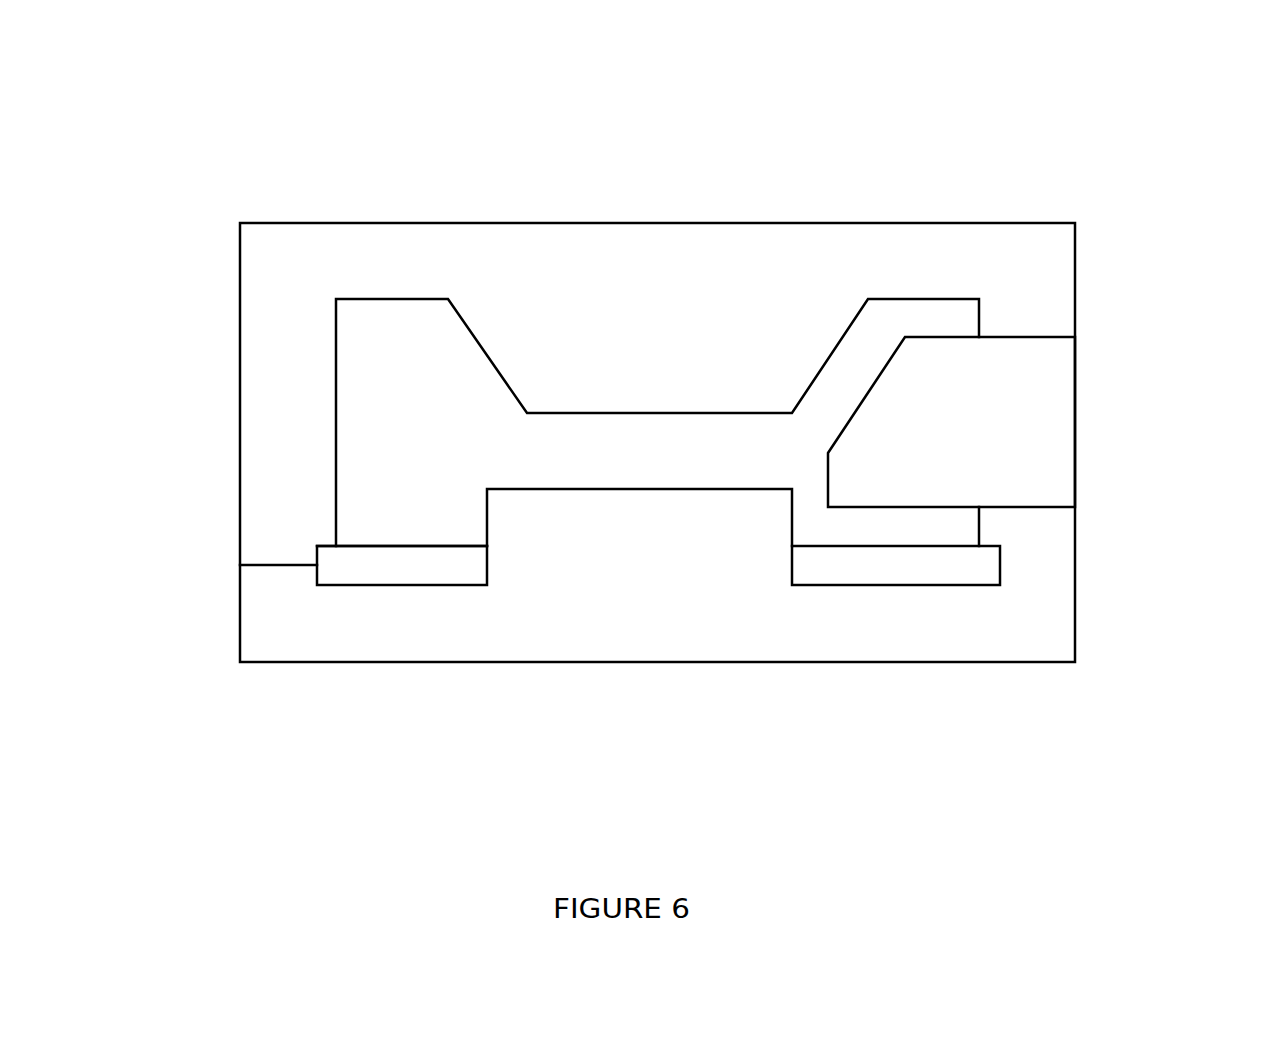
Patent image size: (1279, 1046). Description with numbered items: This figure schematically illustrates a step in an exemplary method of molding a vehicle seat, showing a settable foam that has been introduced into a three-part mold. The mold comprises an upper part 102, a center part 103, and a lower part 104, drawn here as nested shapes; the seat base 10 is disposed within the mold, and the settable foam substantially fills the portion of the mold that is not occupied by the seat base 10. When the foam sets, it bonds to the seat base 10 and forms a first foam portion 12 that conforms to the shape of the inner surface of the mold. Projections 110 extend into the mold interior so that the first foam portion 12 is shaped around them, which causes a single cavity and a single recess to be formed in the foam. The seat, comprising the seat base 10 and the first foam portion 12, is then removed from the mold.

The upper part 102 is at (219, 228).
The center part 103 is at (1091, 394).
The lower part 104 is at (219, 588).
The projections 110 is at (845, 375).
The seat base 10 is at (359, 604).
The first foam portion 12 is at (436, 569).